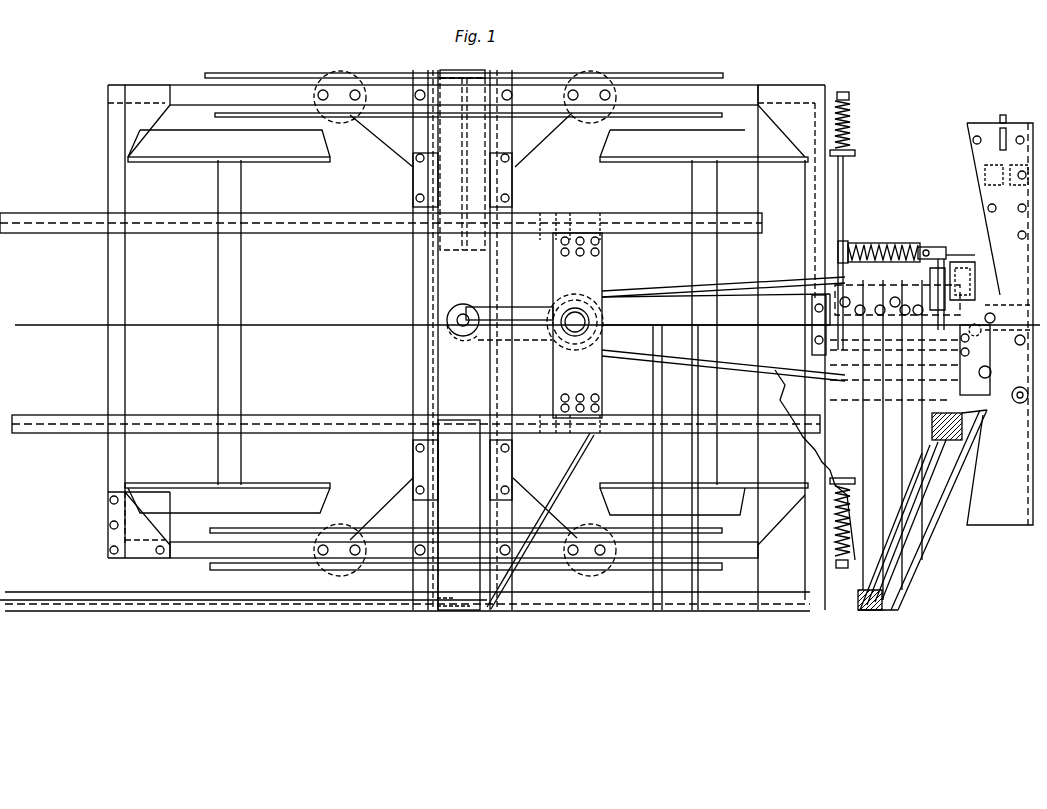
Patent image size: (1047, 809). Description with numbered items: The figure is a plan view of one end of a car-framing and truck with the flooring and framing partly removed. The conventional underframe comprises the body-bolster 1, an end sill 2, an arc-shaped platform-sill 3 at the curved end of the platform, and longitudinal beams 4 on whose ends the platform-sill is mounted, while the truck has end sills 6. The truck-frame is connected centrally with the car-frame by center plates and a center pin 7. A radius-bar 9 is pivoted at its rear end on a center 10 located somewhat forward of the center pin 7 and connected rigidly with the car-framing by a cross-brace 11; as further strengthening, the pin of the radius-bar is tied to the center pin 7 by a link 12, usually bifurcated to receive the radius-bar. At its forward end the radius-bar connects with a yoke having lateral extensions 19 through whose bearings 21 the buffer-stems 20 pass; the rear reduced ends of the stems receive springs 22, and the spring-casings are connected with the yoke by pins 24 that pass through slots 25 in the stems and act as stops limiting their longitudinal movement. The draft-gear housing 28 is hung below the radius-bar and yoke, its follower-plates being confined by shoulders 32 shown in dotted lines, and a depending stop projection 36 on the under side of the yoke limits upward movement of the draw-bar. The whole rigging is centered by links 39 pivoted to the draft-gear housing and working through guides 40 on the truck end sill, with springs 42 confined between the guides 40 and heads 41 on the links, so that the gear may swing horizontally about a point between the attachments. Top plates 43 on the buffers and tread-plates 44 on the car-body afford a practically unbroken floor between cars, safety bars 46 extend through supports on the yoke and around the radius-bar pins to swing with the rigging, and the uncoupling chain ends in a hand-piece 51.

The body-bolster 1 is at (463, 340).
The end sill 2 is at (675, 467).
The platform-sill 3 is at (962, 488).
The longitudinal beams 4 is at (746, 222).
The end sills 6 is at (125, 388).
The center pin 7 is at (463, 312).
The radius-bar 9 is at (716, 309).
The center 10 is at (585, 333).
The cross-brace 11 is at (571, 324).
The link 12 is at (523, 318).
The lateral extensions 19 is at (960, 258).
The buffer-stems 20 is at (848, 244).
The bearings 21 is at (923, 247).
The springs 22 is at (885, 245).
The pins 24 is at (941, 252).
The slots 25 is at (936, 262).
The draft-gear housing 28 is at (994, 314).
The shoulders 32 is at (856, 308).
The stop projection 36 is at (840, 250).
The links 39 is at (845, 202).
The guides 40 is at (856, 153).
The heads 41 is at (850, 96).
The springs 42 is at (852, 127).
The top plates 43 is at (1008, 145).
The tread-plates 44 is at (992, 372).
The bars 46 is at (775, 289).
The hand-piece 51 is at (1006, 128).